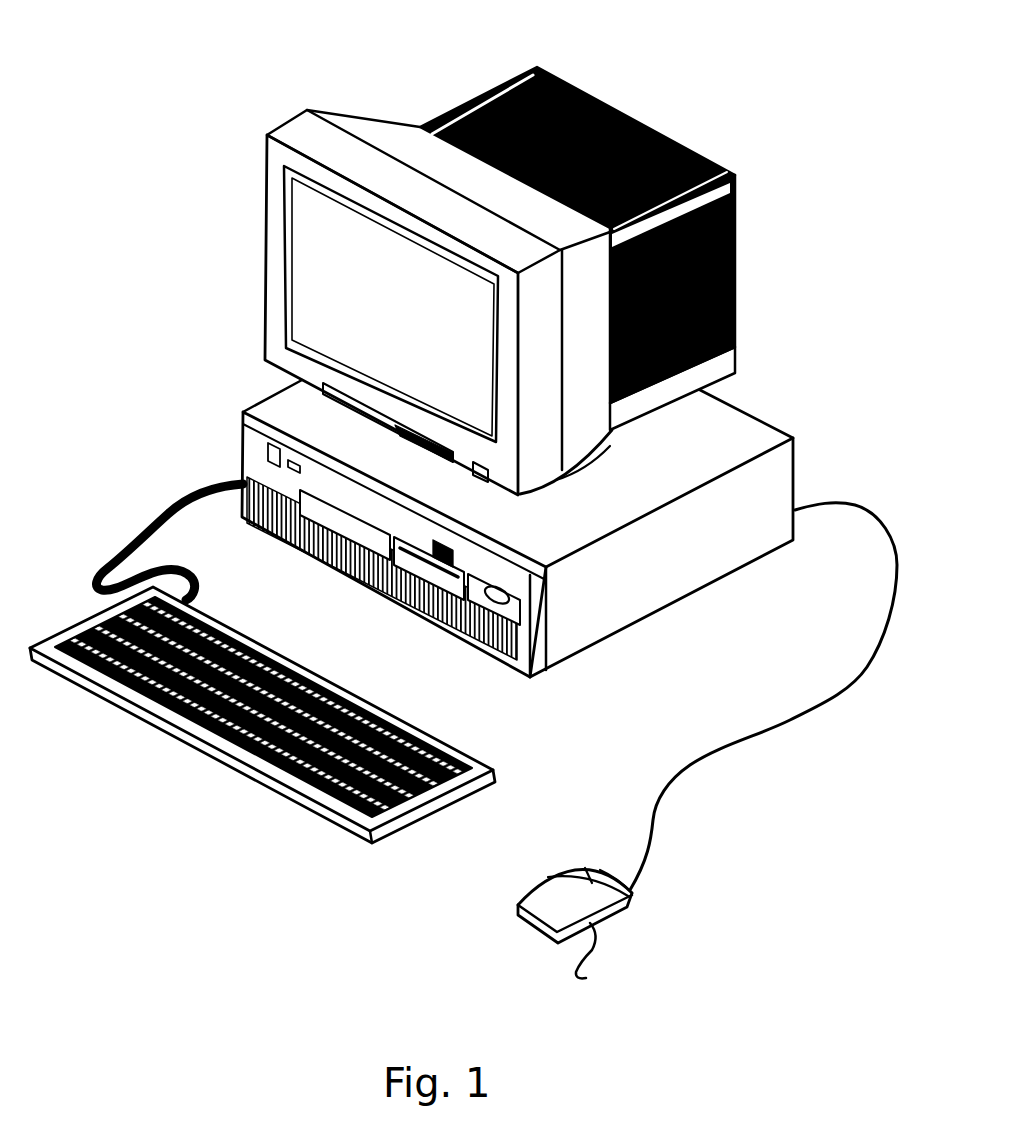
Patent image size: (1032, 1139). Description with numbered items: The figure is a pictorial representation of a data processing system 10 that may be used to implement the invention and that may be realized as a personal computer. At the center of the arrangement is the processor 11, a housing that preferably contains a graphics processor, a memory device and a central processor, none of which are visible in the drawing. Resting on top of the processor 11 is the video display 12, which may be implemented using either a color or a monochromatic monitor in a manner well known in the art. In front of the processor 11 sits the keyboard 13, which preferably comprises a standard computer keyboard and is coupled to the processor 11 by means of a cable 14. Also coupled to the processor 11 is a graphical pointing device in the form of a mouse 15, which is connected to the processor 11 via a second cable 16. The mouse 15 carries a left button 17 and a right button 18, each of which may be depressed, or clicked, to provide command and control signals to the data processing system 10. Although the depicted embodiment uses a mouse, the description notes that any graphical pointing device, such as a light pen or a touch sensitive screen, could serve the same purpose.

The data processing system 10 is at (869, 63).
The processor 11 is at (241, 450).
The video display 12 is at (265, 272).
The keyboard 13 is at (218, 750).
The cable 14 is at (133, 542).
The mouse 15 is at (516, 910).
The cable 16 is at (697, 757).
The left button 17 is at (576, 870).
The right button 18 is at (631, 885).